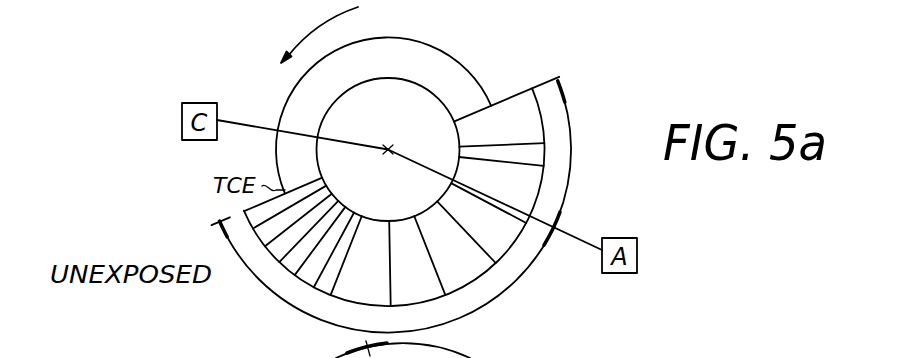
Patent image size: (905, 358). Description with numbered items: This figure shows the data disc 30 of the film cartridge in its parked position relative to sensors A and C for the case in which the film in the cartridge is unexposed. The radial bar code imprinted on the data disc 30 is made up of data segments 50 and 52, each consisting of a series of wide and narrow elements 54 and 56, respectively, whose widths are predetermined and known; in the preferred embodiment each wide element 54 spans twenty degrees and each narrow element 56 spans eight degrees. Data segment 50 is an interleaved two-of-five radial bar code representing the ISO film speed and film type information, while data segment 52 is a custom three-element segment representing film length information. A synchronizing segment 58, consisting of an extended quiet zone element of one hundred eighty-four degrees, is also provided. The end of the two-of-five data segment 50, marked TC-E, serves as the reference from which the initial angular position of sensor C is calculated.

The data disc 30 is at (507, 267).
The data segment 50 is at (482, 308).
The data segment 52 is at (568, 184).
The wide element 54 is at (530, 125).
The narrow element 56 is at (543, 150).
The synchronizing segment 58 is at (459, 71).